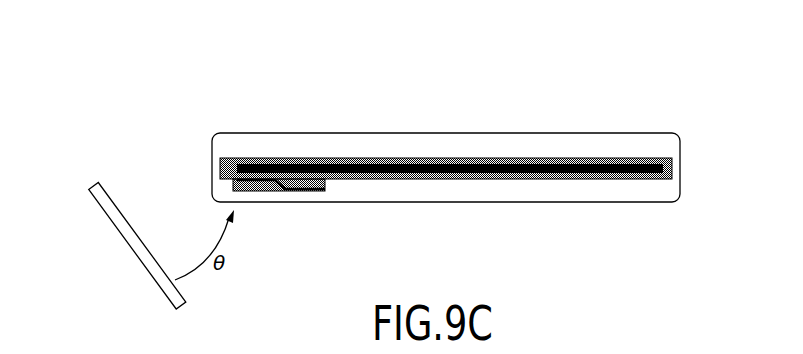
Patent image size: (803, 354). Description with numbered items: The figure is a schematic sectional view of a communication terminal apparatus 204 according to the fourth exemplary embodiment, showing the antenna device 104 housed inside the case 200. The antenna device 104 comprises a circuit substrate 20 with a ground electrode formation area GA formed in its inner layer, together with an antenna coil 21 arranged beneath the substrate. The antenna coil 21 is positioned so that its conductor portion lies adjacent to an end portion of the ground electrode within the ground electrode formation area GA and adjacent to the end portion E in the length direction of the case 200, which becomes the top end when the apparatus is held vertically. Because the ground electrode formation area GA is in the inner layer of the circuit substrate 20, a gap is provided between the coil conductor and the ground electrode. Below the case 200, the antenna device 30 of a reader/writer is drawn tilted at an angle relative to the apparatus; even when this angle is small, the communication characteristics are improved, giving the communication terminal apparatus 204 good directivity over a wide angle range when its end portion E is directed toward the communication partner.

The case 200 is at (673, 133).
The circuit substrate 20 is at (450, 158).
The antenna coil 21 is at (321, 203).
The antenna device 104 is at (522, 146).
The ground electrode formation area GA is at (587, 180).
The end portion E is at (198, 167).
The communication terminal apparatus 204 is at (628, 40).
The antenna device of the reader/writer 30 is at (133, 252).